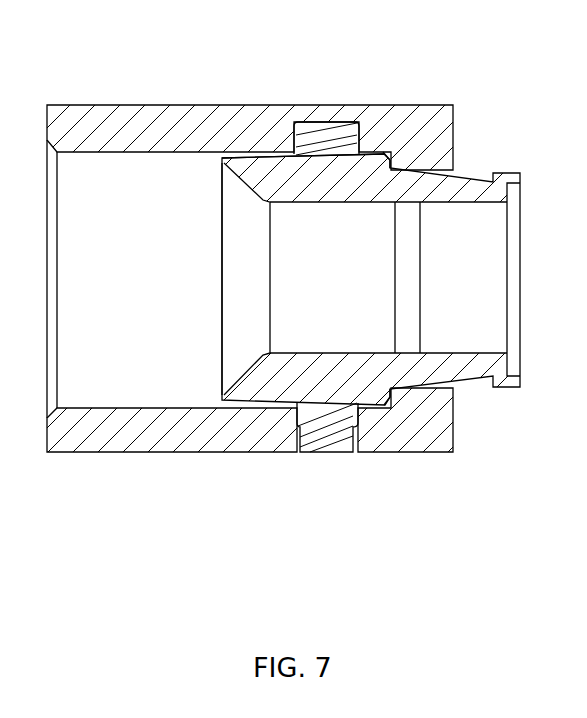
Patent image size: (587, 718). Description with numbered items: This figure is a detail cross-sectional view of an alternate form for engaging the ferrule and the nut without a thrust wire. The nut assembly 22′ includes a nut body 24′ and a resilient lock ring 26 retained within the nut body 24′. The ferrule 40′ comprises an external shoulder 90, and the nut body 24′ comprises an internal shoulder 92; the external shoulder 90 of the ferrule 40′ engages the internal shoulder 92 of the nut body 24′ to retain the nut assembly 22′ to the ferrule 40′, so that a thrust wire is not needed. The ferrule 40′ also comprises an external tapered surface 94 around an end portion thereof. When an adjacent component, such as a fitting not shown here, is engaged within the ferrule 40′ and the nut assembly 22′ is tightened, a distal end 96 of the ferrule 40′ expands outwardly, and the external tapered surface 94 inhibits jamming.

The nut assembly 22′ is at (138, 93).
The nut body 24′ is at (282, 112).
The resilient lock ring 26 is at (322, 440).
The ferrule 40′ is at (452, 188).
The external shoulder 90 is at (391, 394).
The internal shoulder 92 is at (383, 148).
The external tapered surface 94 is at (243, 160).
The distal end 96 is at (213, 390).